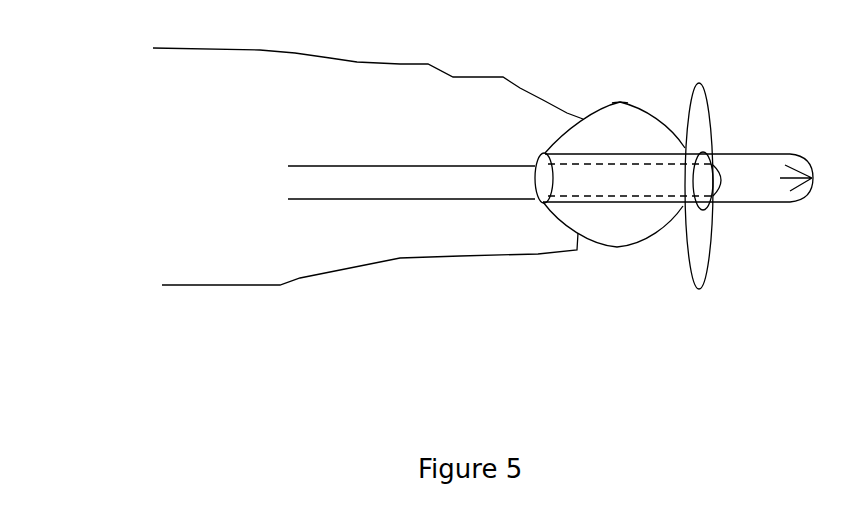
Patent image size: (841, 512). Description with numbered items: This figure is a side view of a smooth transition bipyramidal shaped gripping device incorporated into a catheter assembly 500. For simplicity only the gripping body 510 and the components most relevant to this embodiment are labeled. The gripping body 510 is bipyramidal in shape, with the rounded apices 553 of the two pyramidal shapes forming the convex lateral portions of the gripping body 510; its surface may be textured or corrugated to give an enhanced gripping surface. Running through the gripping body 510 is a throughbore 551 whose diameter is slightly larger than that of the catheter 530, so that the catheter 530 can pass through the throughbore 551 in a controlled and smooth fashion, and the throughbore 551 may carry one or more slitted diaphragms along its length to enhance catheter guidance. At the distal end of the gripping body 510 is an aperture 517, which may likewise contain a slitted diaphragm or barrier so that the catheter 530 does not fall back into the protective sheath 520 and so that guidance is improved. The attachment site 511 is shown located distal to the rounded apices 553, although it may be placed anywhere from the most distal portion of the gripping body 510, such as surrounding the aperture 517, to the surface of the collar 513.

The catheter assembly 500 is at (93, 167).
The gripping body 510 is at (632, 227).
The attachment site 511 is at (588, 120).
The collar 513 is at (700, 97).
The aperture 517 is at (543, 182).
The protective sheath 520 is at (390, 63).
The catheter 530 is at (395, 166).
The throughbore 551 is at (643, 156).
The rounded apices 553 is at (618, 101).